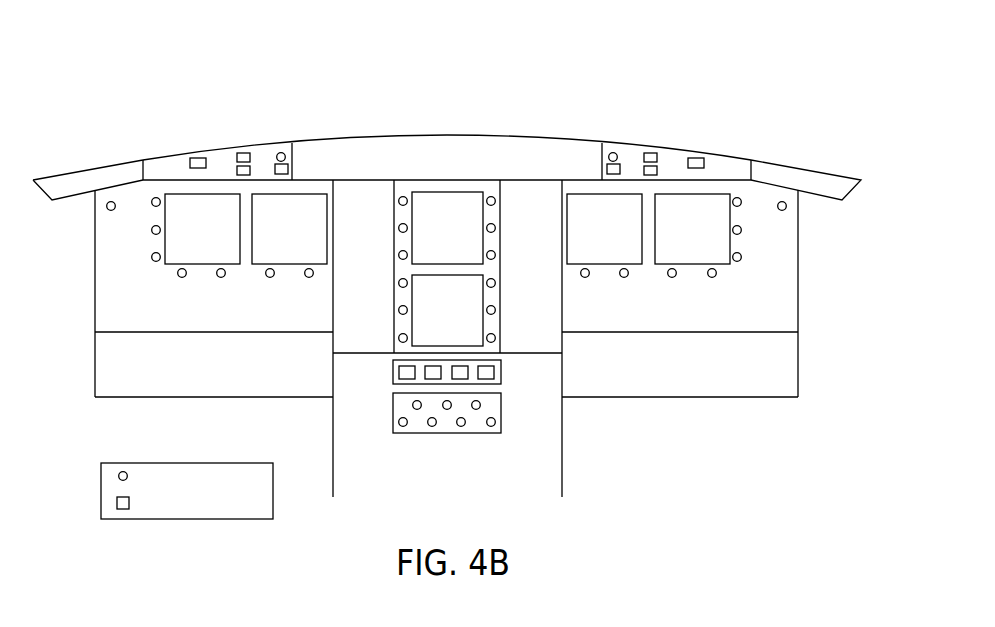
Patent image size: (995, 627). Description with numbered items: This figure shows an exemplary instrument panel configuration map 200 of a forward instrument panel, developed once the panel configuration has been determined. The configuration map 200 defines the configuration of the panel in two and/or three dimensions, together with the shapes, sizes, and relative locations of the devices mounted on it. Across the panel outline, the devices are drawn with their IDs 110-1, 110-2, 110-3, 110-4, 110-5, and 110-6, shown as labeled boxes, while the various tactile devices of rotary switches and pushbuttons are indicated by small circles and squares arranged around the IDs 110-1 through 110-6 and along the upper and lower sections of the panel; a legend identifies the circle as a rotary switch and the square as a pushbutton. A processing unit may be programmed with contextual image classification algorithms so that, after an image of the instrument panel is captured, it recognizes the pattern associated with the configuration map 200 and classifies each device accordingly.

The instrument panel configuration map 200 is at (483, 93).
The ID 110-1 is at (202, 229).
The ID 110-2 is at (289, 229).
The ID 110-3 is at (447, 228).
The ID 110-4 is at (447, 310).
The ID 110-5 is at (604, 229).
The ID 110-6 is at (692, 229).